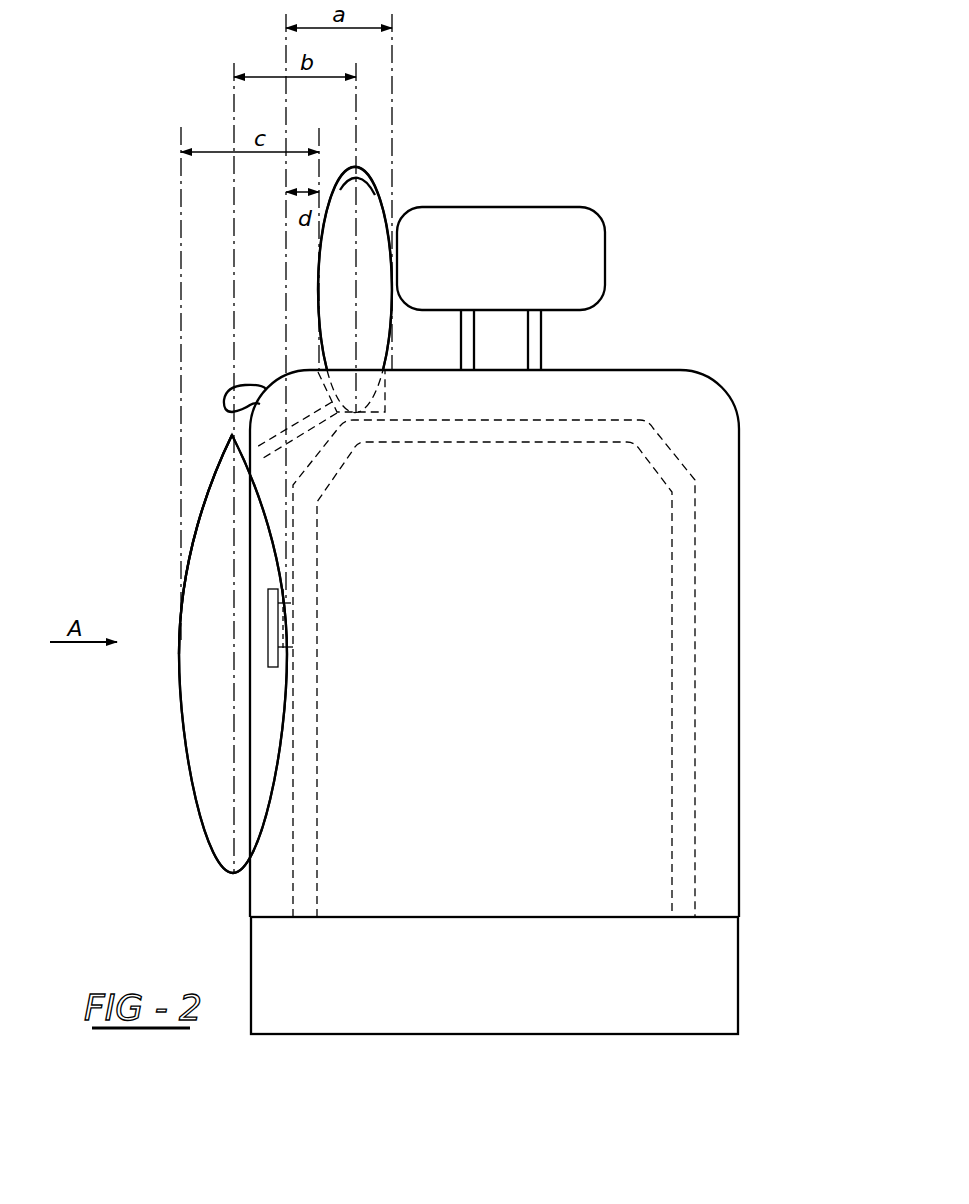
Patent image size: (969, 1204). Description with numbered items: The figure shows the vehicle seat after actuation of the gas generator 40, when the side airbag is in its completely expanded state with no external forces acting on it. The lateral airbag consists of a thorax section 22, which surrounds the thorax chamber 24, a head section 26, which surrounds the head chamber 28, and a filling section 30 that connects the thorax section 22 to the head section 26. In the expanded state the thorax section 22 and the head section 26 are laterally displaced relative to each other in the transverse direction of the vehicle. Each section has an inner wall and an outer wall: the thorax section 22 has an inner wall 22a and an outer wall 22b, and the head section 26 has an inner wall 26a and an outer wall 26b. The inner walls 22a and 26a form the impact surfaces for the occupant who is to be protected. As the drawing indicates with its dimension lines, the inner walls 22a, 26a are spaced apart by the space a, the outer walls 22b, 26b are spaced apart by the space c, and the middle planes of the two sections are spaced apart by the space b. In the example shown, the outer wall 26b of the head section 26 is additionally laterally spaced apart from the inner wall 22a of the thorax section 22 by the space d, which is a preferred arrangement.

The thorax section 22 is at (195, 810).
The inner wall of the thorax section 22a is at (275, 515).
The outer wall of the thorax section 22b is at (193, 502).
The thorax chamber 24 is at (198, 735).
The head section 26 is at (390, 330).
The inner wall of the head section 26a is at (392, 280).
The outer wall of the head section 26b is at (320, 308).
The head chamber 28 is at (370, 208).
The filling section 30 is at (278, 440).
The gas generator 40 is at (275, 658).